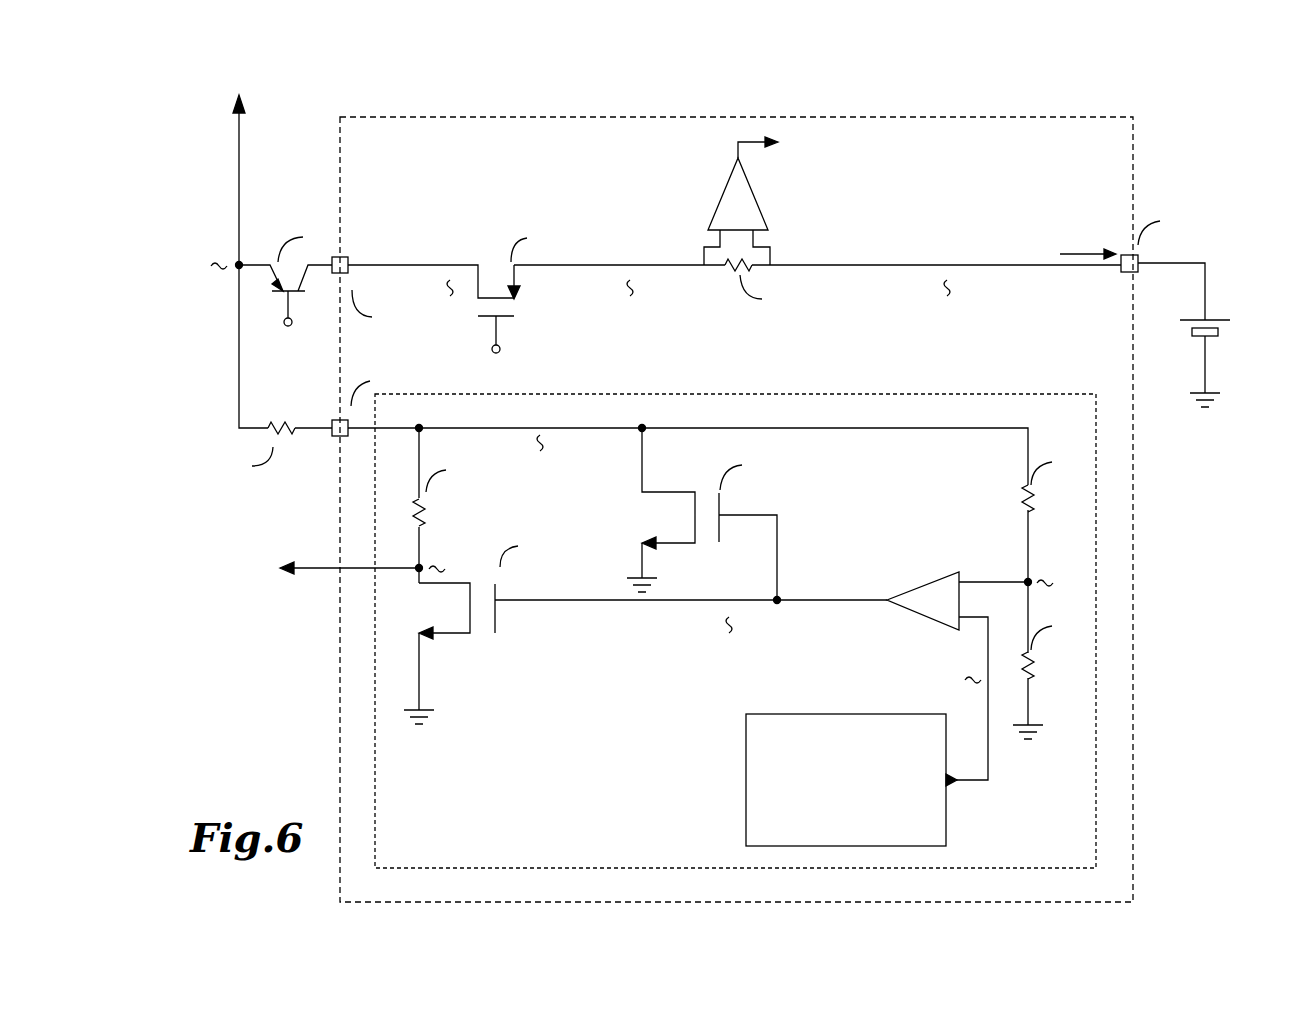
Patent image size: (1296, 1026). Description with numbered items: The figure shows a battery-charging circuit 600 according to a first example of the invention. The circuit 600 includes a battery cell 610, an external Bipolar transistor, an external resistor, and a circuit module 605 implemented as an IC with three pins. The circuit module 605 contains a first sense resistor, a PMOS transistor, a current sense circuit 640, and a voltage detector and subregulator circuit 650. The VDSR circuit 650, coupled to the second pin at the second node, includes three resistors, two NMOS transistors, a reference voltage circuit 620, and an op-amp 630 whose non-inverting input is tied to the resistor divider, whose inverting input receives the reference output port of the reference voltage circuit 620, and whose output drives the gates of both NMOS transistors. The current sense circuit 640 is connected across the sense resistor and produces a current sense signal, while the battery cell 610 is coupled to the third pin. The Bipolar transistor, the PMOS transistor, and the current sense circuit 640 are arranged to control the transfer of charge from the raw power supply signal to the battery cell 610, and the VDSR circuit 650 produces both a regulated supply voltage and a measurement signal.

The circuit 600 is at (1175, 122).
The circuit module 605 is at (731, 110).
The battery cell 610 is at (1228, 310).
The reference voltage circuit 620 is at (848, 710).
The op-amp 630 is at (930, 570).
The current sense circuit 640 is at (712, 197).
The voltage detector and subregulator circuit 650 is at (733, 390).